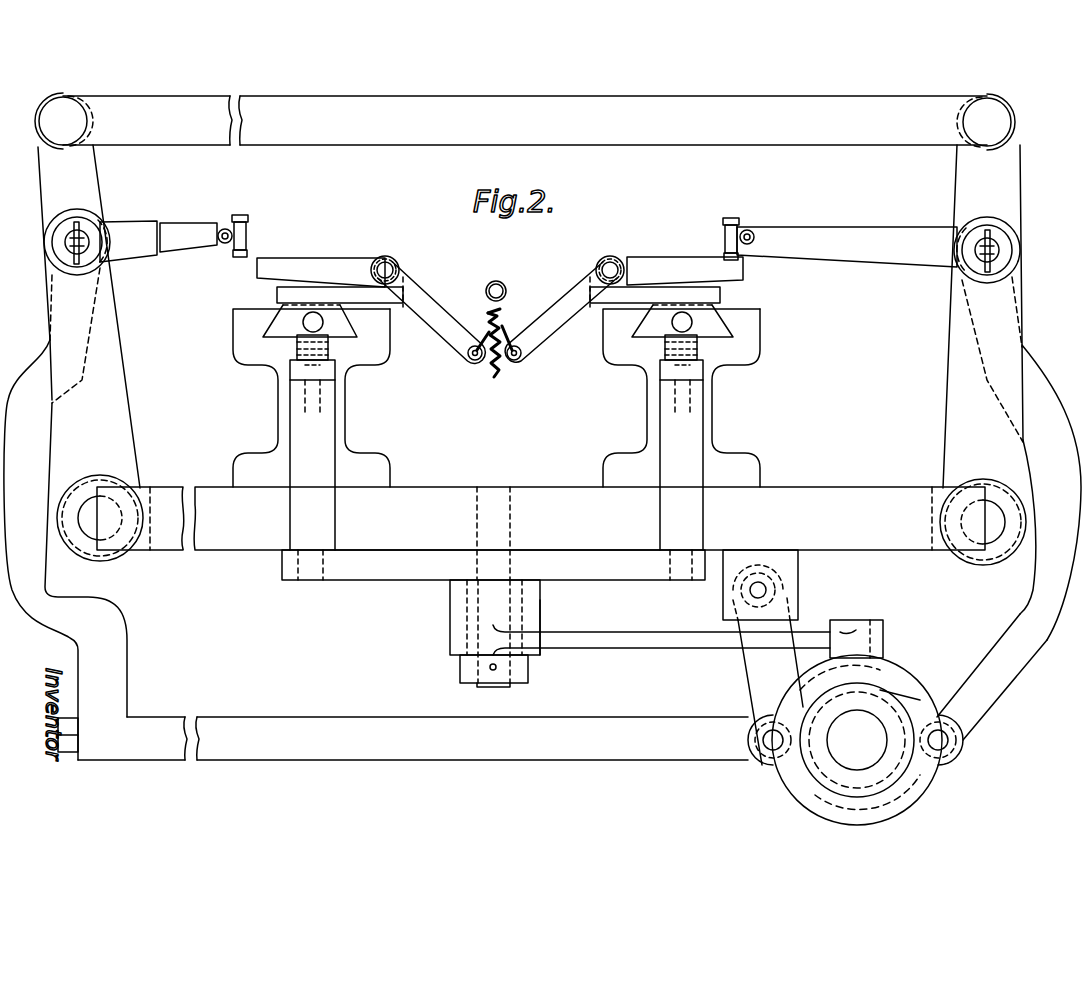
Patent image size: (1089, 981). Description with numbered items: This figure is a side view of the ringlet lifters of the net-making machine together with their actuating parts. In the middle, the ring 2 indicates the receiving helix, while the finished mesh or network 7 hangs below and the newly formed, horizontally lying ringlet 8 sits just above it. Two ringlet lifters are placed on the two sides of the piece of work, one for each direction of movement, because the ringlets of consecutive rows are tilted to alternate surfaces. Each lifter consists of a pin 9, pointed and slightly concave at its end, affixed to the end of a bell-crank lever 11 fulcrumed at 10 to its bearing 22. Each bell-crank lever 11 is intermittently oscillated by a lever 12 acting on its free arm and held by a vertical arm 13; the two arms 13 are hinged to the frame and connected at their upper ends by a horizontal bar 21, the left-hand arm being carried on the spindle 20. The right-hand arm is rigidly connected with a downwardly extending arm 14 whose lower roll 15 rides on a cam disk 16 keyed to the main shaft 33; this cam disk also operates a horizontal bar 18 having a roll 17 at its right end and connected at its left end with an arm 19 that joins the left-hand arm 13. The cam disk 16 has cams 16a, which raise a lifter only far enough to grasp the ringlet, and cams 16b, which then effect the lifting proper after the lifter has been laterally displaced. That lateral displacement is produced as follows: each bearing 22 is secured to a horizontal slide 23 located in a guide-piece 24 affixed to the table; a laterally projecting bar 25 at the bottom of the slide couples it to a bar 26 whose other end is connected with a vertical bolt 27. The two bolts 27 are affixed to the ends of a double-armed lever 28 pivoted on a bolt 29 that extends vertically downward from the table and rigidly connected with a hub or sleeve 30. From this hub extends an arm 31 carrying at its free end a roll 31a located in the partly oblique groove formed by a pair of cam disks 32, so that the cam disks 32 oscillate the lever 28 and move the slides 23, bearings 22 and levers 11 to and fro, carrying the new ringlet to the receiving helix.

The receiving helix 2 is at (502, 284).
The finished mesh or network 7 is at (490, 378).
The newly formed ringlet 8 is at (505, 318).
The pin 9 is at (481, 333).
The fulcrum 10 is at (400, 268).
The bell-crank lever 11 is at (464, 352).
The lever 12 is at (150, 224).
The vertical arm 13 is at (98, 208).
The arm 14 is at (1020, 615).
The roll 15 is at (958, 742).
The cam disk 16 is at (812, 770).
The cam 16a is at (905, 698).
The cam 16b is at (765, 686).
The roll 17 is at (750, 741).
The horizontal bar 18 is at (455, 760).
The arm 19 is at (542, 452).
The spindle 20 is at (93, 540).
The horizontal bar 21 is at (580, 138).
The bearing 22 is at (322, 290).
The horizontal slide 23 is at (275, 328).
The guide-piece 24 is at (245, 366).
The laterally projecting bar 25 is at (327, 345).
The bar 26 is at (297, 366).
The vertical bolt 27 is at (320, 428).
The double-armed lever 28 is at (365, 578).
The bolt 29 is at (480, 608).
The hub or sleeve 30 is at (538, 628).
The arm 31 is at (626, 648).
The roll 31a is at (883, 672).
The cam disk 32 is at (918, 703).
The main shaft 33 is at (857, 740).